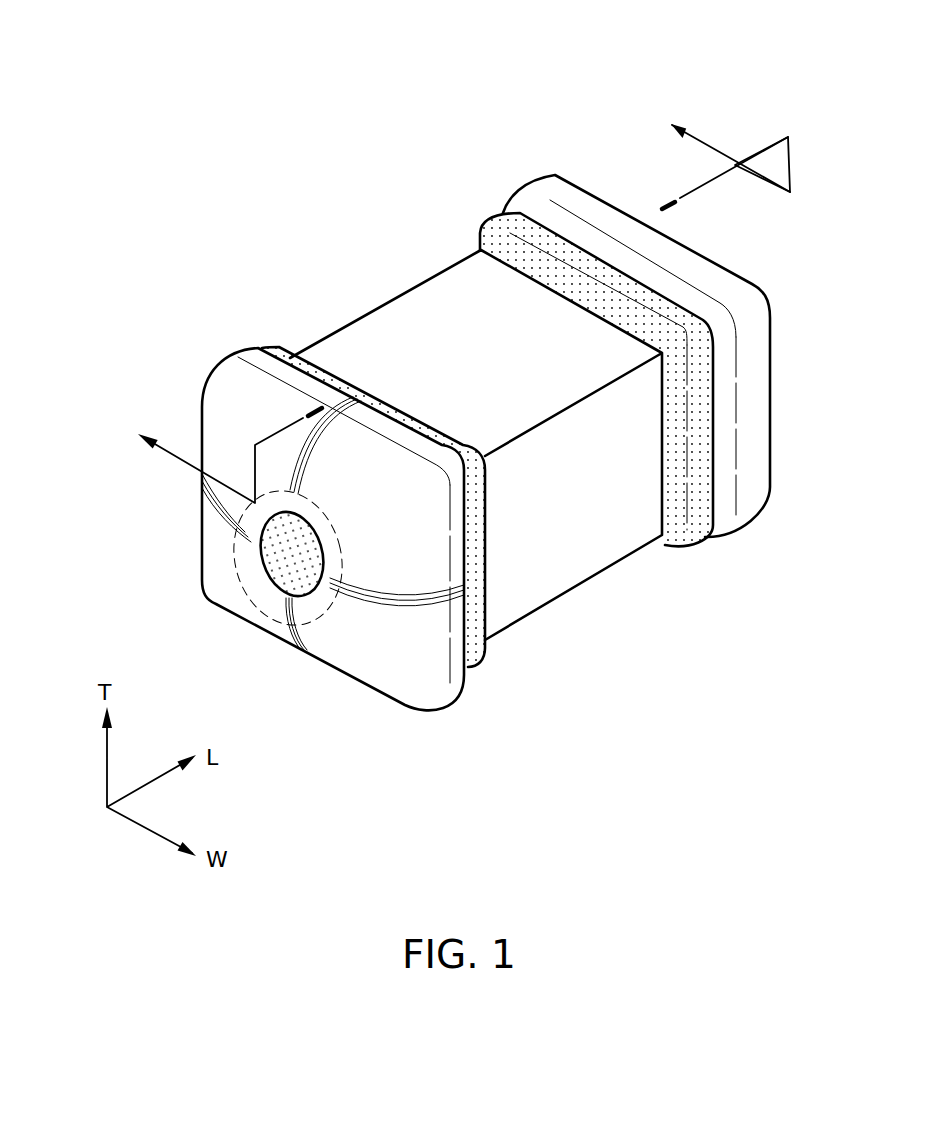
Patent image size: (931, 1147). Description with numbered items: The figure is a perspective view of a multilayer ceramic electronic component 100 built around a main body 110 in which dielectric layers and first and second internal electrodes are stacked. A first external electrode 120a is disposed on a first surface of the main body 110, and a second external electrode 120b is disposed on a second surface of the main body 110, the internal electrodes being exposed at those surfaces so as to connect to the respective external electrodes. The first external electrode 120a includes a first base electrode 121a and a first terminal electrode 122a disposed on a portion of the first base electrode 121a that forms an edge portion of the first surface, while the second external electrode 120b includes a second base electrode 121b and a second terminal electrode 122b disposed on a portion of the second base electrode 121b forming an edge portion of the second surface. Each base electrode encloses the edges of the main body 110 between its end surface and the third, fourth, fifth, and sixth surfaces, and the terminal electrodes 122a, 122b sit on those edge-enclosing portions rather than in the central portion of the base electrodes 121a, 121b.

The multilayer ceramic electronic component 100 is at (448, 37).
The main body 110 is at (408, 302).
The first external electrode 120a is at (337, 513).
The second external electrode 120b is at (642, 368).
The first base electrode 121a is at (272, 562).
The second base electrode 121b is at (668, 534).
The first terminal electrode 122a is at (461, 678).
The second terminal electrode 122b is at (750, 507).